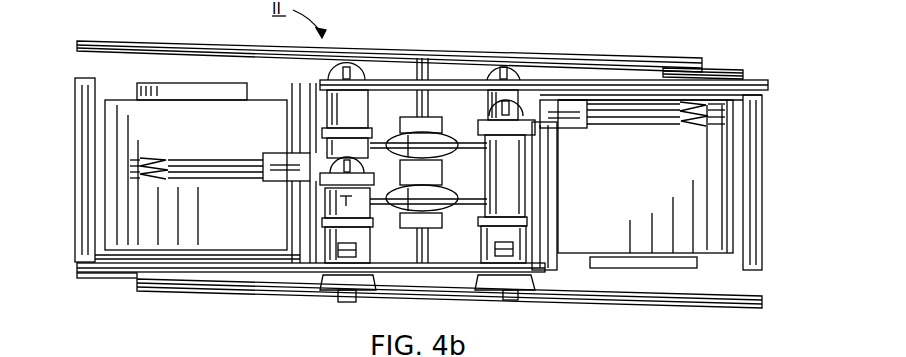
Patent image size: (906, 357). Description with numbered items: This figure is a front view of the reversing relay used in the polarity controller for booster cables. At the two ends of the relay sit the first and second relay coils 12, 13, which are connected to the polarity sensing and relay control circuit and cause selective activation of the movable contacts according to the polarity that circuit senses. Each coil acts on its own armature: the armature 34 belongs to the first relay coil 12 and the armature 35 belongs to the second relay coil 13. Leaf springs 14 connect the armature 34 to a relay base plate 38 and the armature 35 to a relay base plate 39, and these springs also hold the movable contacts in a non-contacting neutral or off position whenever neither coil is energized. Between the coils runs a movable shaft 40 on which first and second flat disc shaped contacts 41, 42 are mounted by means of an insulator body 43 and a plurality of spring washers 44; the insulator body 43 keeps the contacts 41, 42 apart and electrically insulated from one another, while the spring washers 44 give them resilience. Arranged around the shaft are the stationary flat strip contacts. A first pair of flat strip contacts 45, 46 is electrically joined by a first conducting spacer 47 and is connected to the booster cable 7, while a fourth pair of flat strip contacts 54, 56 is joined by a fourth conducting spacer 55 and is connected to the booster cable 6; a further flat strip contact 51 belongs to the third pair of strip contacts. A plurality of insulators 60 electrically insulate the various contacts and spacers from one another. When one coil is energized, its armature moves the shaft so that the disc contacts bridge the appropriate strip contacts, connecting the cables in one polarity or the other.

The booster cable 6 is at (187, 167).
The booster cable 7 is at (623, 122).
The first relay coil 12 is at (128, 110).
The second relay coil 13 is at (702, 242).
The leaf springs 14 is at (717, 75).
The armature 34 is at (150, 43).
The armature 35 is at (668, 303).
The relay base plate 38 is at (645, 88).
The relay base plate 39 is at (218, 268).
The movable shaft 40 is at (424, 68).
The first flat disc shaped contact 41 is at (470, 150).
The second flat disc shaped contact 42 is at (470, 205).
The insulator body 43 is at (433, 118).
The spring washers 44 is at (403, 134).
The flat strip contact 45 is at (520, 130).
The flat strip contact 46 is at (523, 220).
The first conducting spacer 47 is at (512, 197).
The flat strip contact 51 is at (320, 132).
The flat strip contact 54 is at (338, 220).
The fourth conducting spacer 55 is at (330, 201).
The flat strip contact 56 is at (318, 181).
The insulators 60 is at (347, 110).